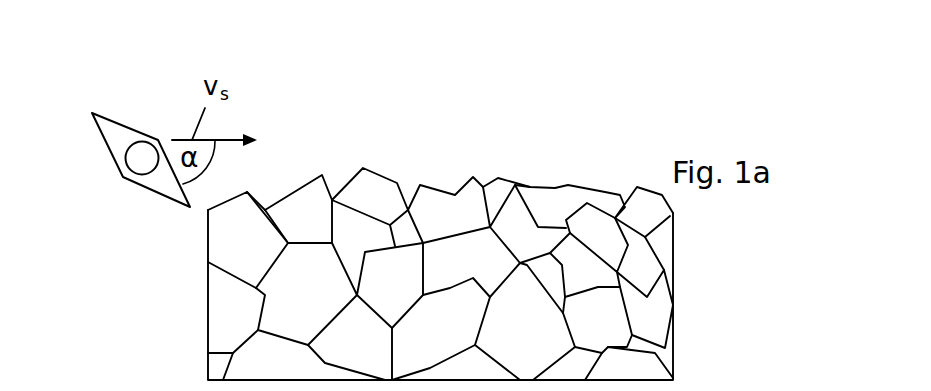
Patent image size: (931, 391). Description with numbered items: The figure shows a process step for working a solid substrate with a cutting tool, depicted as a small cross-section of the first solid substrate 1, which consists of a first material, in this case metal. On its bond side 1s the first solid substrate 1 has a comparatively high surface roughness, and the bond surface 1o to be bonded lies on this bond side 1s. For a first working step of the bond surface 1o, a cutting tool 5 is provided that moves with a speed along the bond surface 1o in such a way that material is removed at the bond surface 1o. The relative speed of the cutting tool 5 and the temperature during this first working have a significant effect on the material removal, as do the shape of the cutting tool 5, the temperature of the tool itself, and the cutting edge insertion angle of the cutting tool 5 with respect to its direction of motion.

The first solid substrate 1 is at (702, 286).
The bond side 1s is at (592, 104).
The bond surface 1o is at (607, 193).
The cutting tool 5 is at (138, 155).